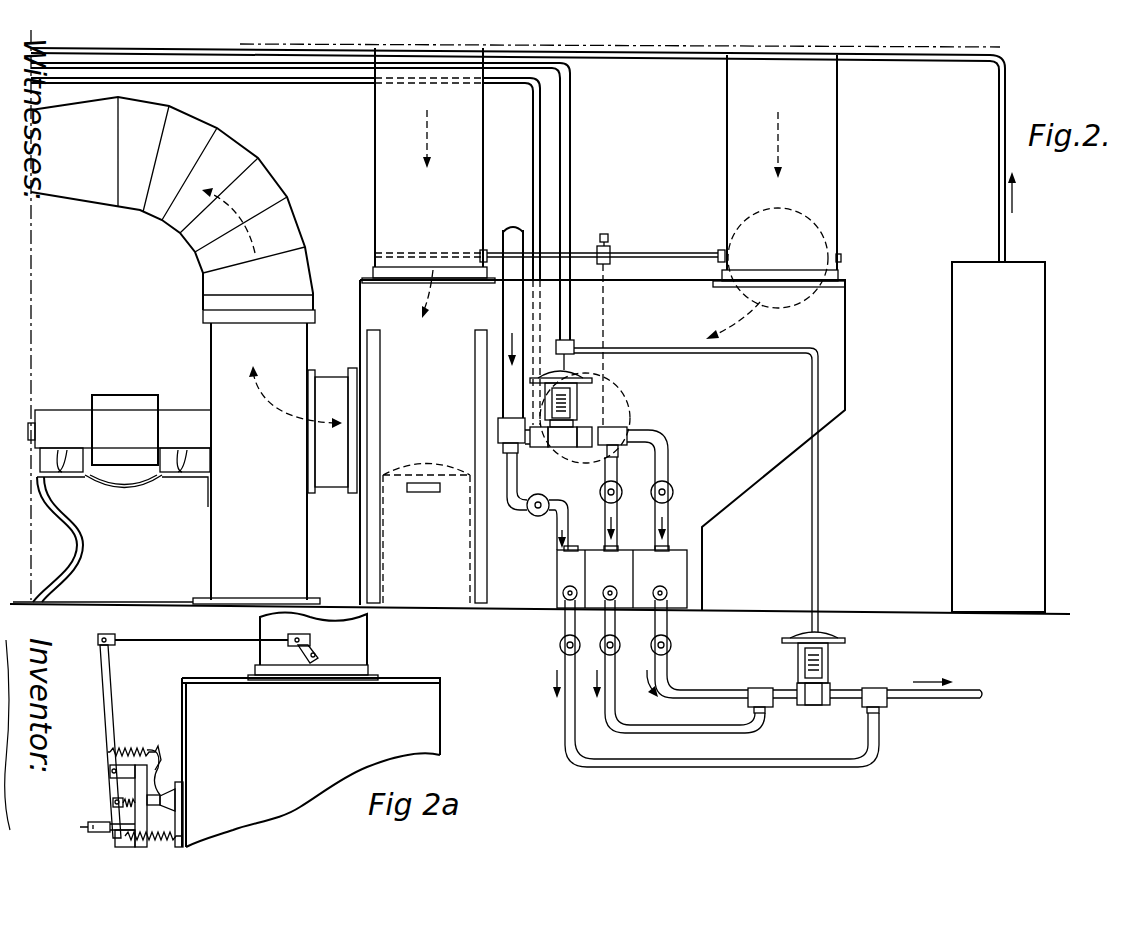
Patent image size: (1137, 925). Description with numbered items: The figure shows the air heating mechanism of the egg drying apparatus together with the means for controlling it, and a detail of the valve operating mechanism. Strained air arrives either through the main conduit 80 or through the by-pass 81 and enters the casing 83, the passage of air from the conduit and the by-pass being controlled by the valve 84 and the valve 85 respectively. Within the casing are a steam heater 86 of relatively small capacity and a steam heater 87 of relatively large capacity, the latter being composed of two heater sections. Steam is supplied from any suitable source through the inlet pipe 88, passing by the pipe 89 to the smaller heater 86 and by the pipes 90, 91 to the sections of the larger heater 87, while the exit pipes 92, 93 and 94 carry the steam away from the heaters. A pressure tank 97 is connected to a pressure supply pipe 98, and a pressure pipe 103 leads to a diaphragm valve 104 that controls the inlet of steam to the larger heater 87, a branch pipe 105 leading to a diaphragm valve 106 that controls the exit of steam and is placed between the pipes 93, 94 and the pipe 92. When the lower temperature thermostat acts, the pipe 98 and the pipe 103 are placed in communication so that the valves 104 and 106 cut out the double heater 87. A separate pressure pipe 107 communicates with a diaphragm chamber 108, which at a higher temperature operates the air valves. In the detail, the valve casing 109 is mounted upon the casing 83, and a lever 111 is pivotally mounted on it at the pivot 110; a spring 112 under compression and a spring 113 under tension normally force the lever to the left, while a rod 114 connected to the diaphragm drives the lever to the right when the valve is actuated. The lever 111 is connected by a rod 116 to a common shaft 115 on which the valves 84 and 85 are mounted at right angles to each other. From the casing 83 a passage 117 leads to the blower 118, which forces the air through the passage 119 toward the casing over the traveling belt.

In FIG. 2, the main conduit 80 is at (838, 122).
In FIG. 2, the by-pass 81 is at (483, 126).
In FIG. 2, the casing 83 is at (845, 373).
In FIG. 2, the valve 84 is at (815, 248).
In FIG. 2, the valve 85 is at (383, 255).
In FIG. 2, the heater 86 is at (560, 580).
In FIG. 2, the heater 87 is at (690, 563).
In FIG. 2, the inlet pipe 88 is at (520, 230).
In FIG. 2, the pipe 89 is at (518, 503).
In FIG. 2, the pipe 90 is at (620, 455).
In FIG. 2, the pipe 91 is at (668, 470).
In FIG. 2, the exit pipe 92 is at (566, 740).
In FIG. 2, the exit pipe 93 is at (612, 718).
In FIG. 2, the exit pipe 94 is at (677, 690).
In FIG. 2, the pressure tank 97 is at (1040, 352).
In FIG. 2, the pressure supply pipe 98 is at (1006, 78).
In FIG. 2, the pressure pipe 103 is at (571, 122).
In FIG. 2, the diaphragm valve 104 is at (530, 378).
In FIG. 2, the branch pipe 105 is at (775, 349).
In FIG. 2, the diaphragm valve 106 is at (840, 638).
In FIG. 2, the pressure pipe 107 is at (540, 196).
In FIG. 2A, the pressure pipe 107 is at (110, 840).
In FIG. 2, the diaphragm chamber 108 is at (618, 392).
In FIG. 2A, the diaphragm chamber 108 is at (152, 800).
In FIG. 2A, the valve casing 109 is at (139, 746).
In FIG. 2A, the pivot 110 is at (114, 768).
In FIG. 2A, the lever 111 is at (100, 654).
In FIG. 2A, the spring 112 is at (124, 748).
In FIG. 2A, the spring 113 is at (160, 834).
In FIG. 2A, the rod 114 is at (128, 798).
In FIG. 2, the shaft 115 is at (660, 253).
In FIG. 2A, the rod 116 is at (207, 638).
In FIG. 2, the passage 117 is at (330, 378).
In FIG. 2, the blower 118 is at (215, 347).
In FIG. 2, the passage 119 is at (173, 210).